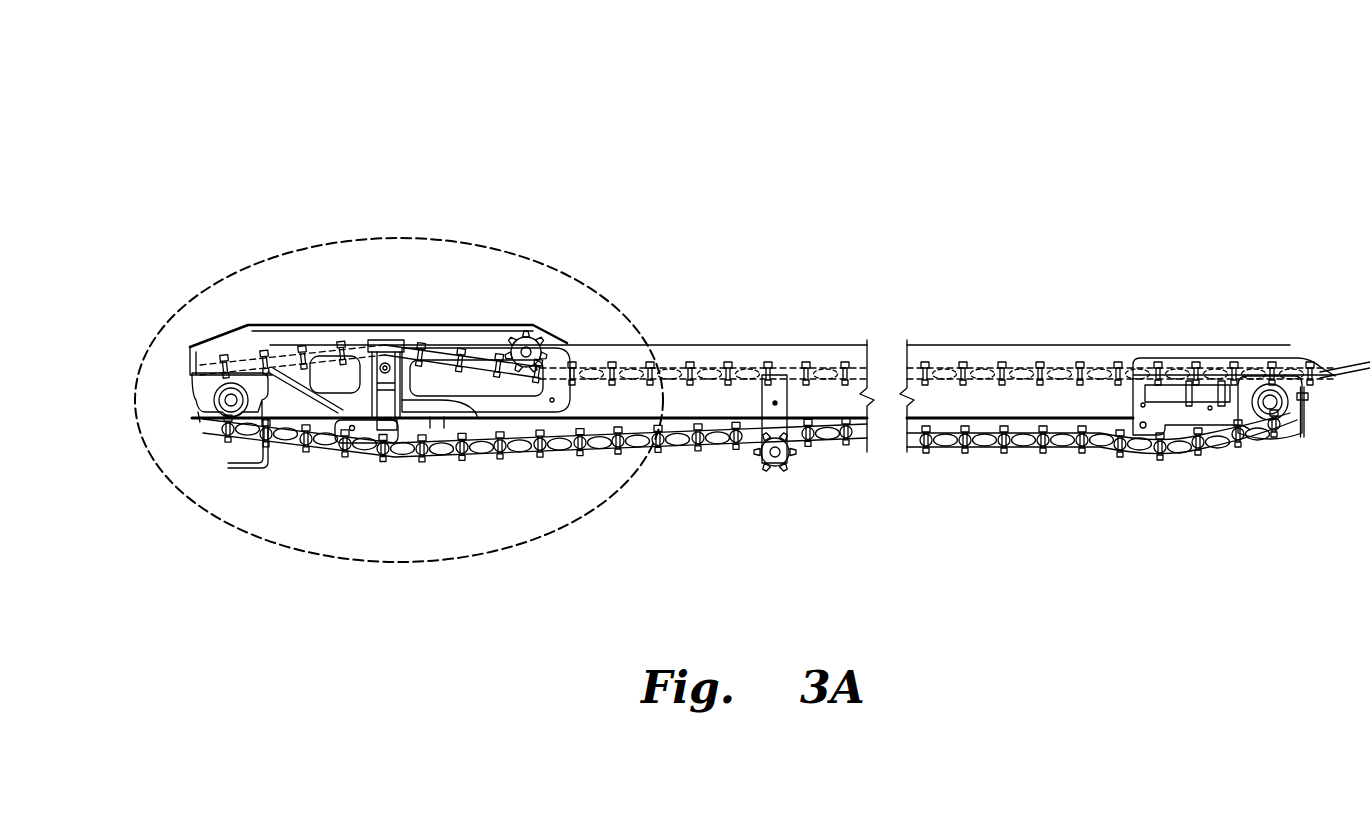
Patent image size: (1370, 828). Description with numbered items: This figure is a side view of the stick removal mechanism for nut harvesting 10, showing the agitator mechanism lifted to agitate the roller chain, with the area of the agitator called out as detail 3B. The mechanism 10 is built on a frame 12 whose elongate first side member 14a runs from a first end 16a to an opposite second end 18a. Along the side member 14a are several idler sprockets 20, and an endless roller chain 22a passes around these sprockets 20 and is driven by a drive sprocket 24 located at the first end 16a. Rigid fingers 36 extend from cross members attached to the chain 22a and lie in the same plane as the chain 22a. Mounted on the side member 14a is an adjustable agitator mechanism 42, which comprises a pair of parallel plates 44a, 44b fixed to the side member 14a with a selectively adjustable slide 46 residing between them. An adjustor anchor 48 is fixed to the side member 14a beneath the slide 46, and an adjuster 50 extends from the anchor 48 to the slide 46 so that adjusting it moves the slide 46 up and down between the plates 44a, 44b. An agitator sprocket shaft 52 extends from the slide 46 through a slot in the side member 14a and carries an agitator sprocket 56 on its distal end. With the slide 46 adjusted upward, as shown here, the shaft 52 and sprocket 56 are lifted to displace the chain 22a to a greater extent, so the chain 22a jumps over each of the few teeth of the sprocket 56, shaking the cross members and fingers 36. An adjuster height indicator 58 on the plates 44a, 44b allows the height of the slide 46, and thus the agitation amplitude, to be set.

The stick removal mechanism for nut harvesting 10 is at (224, 70).
The detail view region 3B is at (555, 262).
The frame 12 is at (932, 346).
The first side member 14a is at (778, 345).
The first end 16a is at (1258, 356).
The second end 18a is at (282, 326).
The idler sprocket 20 is at (540, 336).
The endless roller chain 22a is at (1073, 437).
The drive sprocket 24 is at (1253, 442).
The finger 36 is at (203, 425).
The adjustable agitator mechanism 42 is at (356, 343).
The parallel plate 44a is at (348, 430).
The parallel plate 44b is at (478, 418).
The selectively adjustable slide 46 is at (393, 345).
The adjustor anchor 48 is at (363, 448).
The adjuster 50 is at (434, 425).
The agitator sprocket shaft 52 is at (330, 406).
The agitator sprocket 56 is at (335, 374).
The adjuster height indicator 58 is at (435, 350).